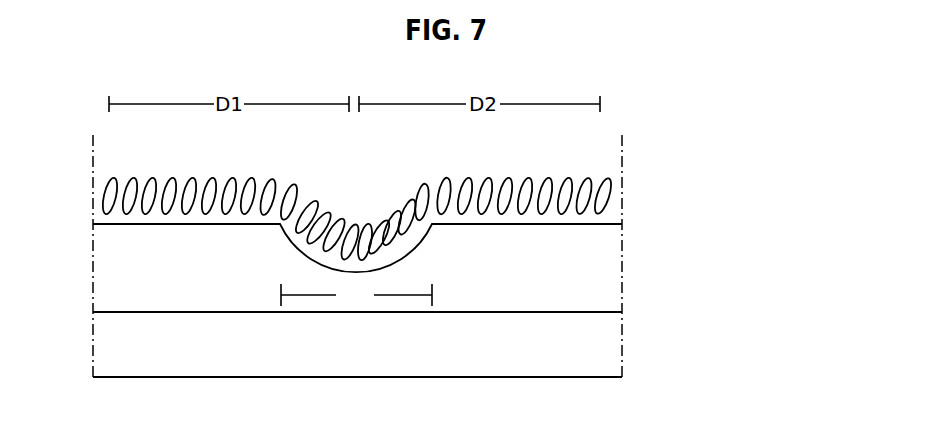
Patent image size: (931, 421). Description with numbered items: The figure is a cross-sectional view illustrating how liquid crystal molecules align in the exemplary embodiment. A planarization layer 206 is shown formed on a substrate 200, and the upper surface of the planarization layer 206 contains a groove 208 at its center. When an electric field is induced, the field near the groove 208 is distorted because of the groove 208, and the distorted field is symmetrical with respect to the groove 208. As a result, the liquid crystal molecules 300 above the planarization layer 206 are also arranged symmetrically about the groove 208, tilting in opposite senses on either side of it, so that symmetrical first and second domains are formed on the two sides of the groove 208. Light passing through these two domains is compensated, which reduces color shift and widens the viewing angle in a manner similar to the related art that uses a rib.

The substrate 200 is at (557, 361).
The planarization layer 206 is at (615, 268).
The groove 208 is at (356, 295).
The liquid crystal molecules 300 is at (612, 188).